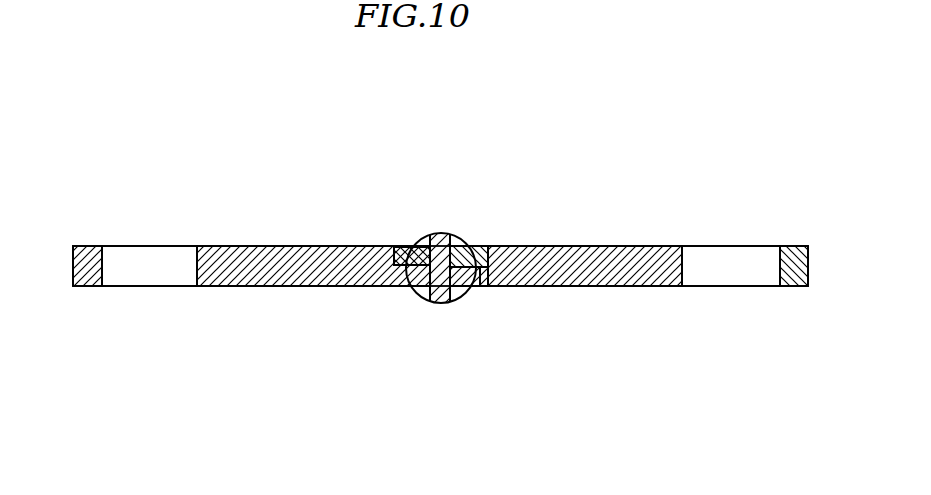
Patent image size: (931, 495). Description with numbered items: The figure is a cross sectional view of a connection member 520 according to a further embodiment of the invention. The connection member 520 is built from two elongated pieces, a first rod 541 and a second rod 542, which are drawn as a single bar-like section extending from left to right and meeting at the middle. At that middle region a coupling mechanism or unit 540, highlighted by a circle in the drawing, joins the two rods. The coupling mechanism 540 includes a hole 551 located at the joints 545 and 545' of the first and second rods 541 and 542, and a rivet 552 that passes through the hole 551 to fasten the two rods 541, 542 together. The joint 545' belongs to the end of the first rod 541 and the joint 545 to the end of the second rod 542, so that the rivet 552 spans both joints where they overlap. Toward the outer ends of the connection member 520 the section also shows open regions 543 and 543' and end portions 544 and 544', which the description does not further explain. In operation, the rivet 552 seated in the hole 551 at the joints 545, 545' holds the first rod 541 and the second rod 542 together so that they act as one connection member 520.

The connection member 520 is at (222, 158).
The coupling mechanism 540 is at (438, 315).
The first rod 541 is at (297, 246).
The second rod 542 is at (565, 288).
The first opening 543 is at (149, 292).
The second opening 543' is at (731, 292).
The first end sealing member 544 is at (83, 241).
The second end sealing member 544' is at (790, 241).
The joint 545 is at (482, 311).
The joint 545' is at (394, 211).
The hole 551 is at (473, 267).
The rivet 552 is at (440, 235).